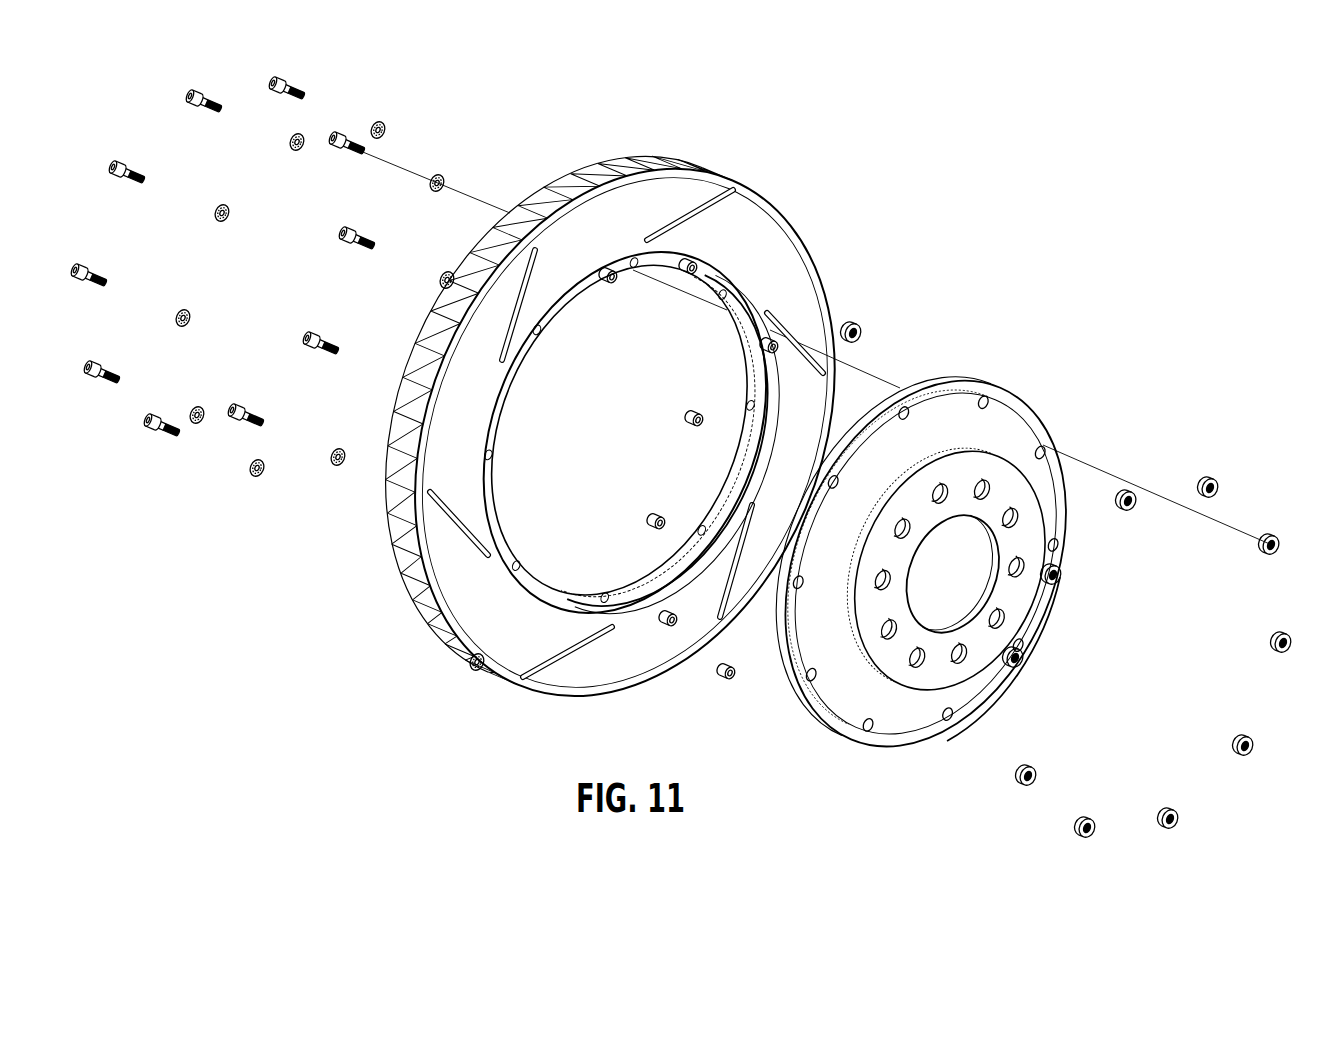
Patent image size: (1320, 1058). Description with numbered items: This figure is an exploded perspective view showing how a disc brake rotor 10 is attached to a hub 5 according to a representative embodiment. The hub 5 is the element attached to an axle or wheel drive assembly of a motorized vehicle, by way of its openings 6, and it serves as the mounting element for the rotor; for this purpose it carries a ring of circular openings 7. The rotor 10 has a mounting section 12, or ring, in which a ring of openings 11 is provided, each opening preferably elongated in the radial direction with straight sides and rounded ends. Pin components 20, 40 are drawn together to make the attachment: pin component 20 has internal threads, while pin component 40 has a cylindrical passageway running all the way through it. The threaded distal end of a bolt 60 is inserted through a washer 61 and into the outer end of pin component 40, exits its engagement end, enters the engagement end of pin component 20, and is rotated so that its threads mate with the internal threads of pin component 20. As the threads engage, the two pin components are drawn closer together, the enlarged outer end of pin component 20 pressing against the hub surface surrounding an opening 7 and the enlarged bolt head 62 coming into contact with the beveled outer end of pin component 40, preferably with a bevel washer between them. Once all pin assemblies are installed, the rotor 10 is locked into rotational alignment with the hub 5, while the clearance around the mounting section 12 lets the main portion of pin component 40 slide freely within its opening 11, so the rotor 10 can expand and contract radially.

The disc brake rotor 10 is at (610, 426).
The openings 11 is at (750, 326).
The mounting section 12 is at (624, 289).
The pin component 40 is at (924, 540).
The hub 5 is at (1043, 592).
The openings 6 is at (1002, 566).
The circular openings 7 is at (1048, 447).
The bolt 60 is at (239, 257).
The washer 61 is at (440, 182).
The bolt head 62 is at (333, 142).
The pin component 20 is at (1272, 553).